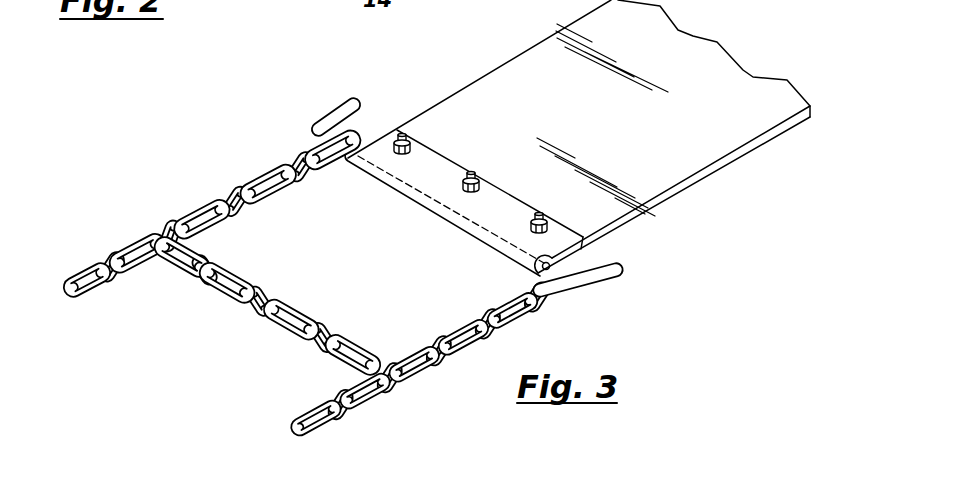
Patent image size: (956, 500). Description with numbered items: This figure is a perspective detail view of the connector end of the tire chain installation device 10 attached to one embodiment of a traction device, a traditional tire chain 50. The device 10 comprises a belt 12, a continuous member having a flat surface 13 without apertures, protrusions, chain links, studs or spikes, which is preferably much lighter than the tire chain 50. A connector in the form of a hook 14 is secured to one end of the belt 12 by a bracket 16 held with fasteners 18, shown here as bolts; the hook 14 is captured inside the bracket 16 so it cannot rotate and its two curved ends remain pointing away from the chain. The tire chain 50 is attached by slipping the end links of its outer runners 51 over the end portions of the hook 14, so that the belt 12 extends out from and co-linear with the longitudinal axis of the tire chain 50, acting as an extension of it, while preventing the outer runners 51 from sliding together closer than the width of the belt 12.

The tire chain installation device 10 is at (758, 52).
The belt 12 is at (667, 172).
The flat surface 13 is at (610, 118).
The hook 14 is at (338, 117).
The bracket 16 is at (423, 207).
The fasteners 18 is at (398, 131).
The tire chain 50 is at (251, 181).
The outer runners 51 is at (290, 157).